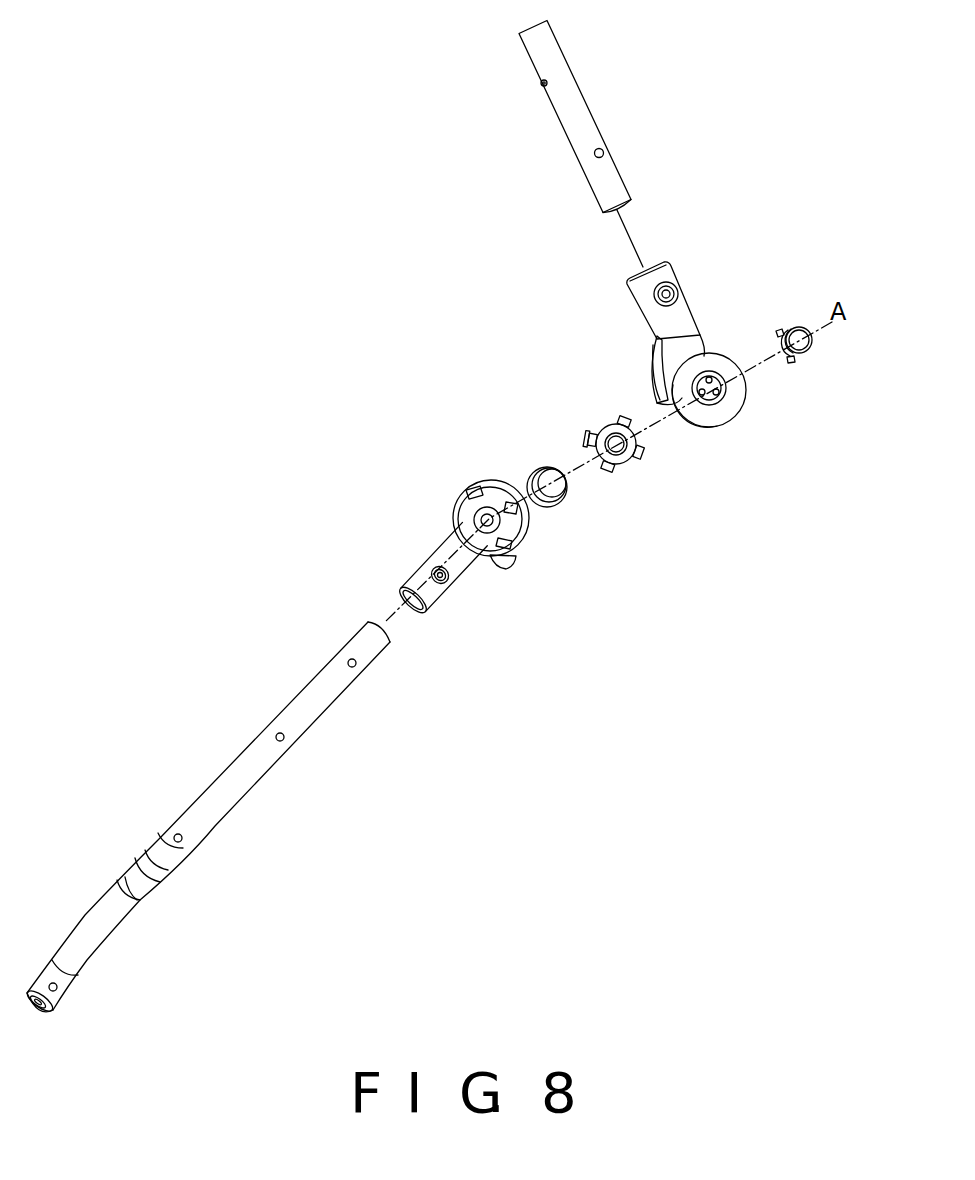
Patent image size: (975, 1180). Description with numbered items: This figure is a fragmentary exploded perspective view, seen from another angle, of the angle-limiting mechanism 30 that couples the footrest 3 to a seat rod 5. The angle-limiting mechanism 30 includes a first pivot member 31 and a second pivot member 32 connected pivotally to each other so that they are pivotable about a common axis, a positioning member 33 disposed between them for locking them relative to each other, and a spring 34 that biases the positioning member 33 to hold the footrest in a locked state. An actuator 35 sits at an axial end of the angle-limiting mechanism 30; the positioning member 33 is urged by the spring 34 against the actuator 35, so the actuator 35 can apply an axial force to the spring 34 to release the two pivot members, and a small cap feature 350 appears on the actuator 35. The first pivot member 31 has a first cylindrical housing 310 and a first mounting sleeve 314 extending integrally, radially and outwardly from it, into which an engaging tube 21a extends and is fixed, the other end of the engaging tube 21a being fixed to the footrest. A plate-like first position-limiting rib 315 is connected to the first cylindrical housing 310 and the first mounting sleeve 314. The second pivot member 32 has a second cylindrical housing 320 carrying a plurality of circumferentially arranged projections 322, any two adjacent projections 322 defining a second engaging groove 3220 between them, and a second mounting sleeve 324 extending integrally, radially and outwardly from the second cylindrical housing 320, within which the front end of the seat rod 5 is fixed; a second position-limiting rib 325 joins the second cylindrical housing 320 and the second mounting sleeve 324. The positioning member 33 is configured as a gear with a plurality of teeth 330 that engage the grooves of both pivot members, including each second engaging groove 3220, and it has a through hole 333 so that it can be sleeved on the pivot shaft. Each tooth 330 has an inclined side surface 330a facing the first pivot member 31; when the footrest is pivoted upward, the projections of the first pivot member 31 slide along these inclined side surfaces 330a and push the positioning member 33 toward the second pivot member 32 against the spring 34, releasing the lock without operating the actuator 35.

The engaging tube 21a is at (585, 135).
The footrest 3 is at (788, 575).
The angle-limiting mechanism 30 is at (716, 598).
The first pivot member 31 is at (685, 443).
The first mounting sleeve 314 is at (647, 297).
The first position-limiting rib 315 is at (655, 384).
The first cylindrical housing 310 is at (708, 417).
The actuator 35 is at (761, 387).
The cap tabs 350 is at (777, 334).
The positioning member 33 is at (604, 450).
The through hole 333 is at (618, 458).
The teeth 330 is at (583, 437).
The inclined side surface 330a is at (583, 428).
The spring 34 is at (548, 485).
The second pivot member 32 is at (552, 535).
The second cylindrical housing 320 is at (482, 478).
The projections 322 is at (466, 489).
The second engaging groove 3220 is at (533, 537).
The second mounting sleeve 324 is at (467, 578).
The second position-limiting rib 325 is at (493, 563).
The seat rod 5 is at (312, 703).